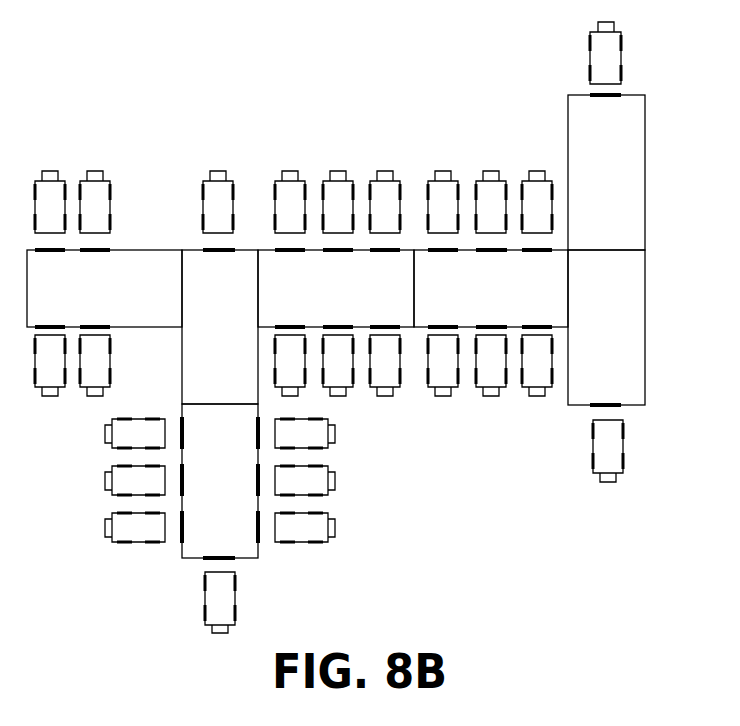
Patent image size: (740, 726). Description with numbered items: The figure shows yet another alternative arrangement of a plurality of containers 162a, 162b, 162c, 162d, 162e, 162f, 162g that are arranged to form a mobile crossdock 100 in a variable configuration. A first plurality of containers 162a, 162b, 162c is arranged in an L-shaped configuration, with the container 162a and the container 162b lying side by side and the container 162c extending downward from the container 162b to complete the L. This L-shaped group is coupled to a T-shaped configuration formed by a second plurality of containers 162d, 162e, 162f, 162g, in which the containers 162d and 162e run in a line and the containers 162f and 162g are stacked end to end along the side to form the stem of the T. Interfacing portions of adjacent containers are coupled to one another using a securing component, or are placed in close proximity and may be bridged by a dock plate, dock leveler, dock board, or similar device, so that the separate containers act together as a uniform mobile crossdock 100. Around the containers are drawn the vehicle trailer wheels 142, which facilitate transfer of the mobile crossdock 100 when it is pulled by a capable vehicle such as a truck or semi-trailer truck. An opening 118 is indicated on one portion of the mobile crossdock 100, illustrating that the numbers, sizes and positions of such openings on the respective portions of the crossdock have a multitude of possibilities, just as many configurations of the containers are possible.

The mobile crossdock 100 is at (376, 327).
The opening 118 is at (624, 408).
The wheels 142 is at (407, 412).
The container 162a is at (126, 297).
The container 162b is at (243, 337).
The container 162c is at (243, 492).
The container 162d is at (362, 315).
The container 162e is at (513, 297).
The container 162f is at (586, 182).
The container 162g is at (626, 366).